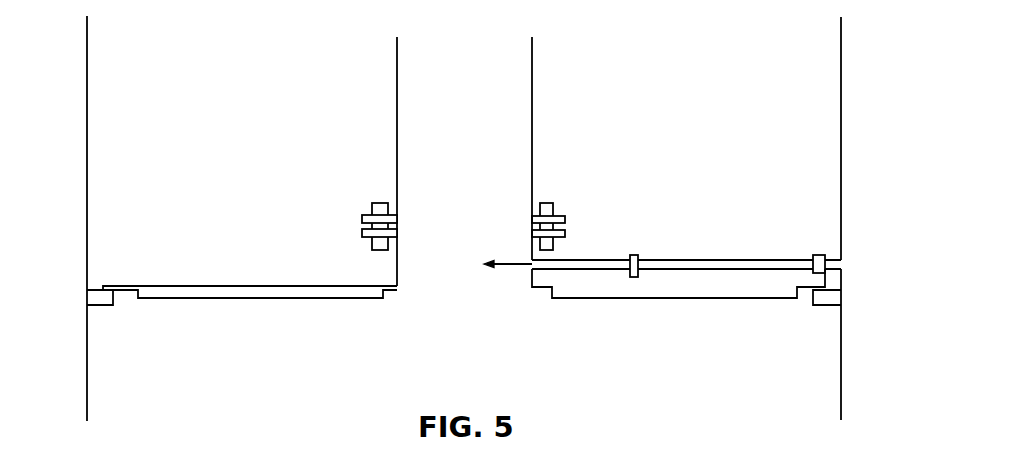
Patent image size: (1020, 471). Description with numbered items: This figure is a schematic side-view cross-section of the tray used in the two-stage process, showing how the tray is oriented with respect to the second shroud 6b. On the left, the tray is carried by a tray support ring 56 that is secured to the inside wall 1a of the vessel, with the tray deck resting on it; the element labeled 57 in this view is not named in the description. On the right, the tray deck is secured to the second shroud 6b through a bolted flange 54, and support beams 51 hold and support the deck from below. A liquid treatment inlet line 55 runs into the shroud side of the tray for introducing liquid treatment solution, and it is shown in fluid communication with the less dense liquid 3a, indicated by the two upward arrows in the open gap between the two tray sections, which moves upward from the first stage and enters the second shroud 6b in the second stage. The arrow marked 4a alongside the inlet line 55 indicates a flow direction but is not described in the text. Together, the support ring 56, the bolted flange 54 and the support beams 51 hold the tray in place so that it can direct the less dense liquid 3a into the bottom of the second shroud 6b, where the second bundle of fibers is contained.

The inside wall of vessel 1a is at (87, 145).
The second shroud 6b is at (532, 118).
The bolted flange 54 is at (381, 203).
The first plate 57 is at (122, 286).
The tray support ring 56 is at (97, 289).
The liquid treatment inlet line 55 is at (843, 263).
The movement direction arrow 4a is at (508, 263).
The support beams 51 is at (673, 299).
The less dense liquid 3a is at (436, 299).